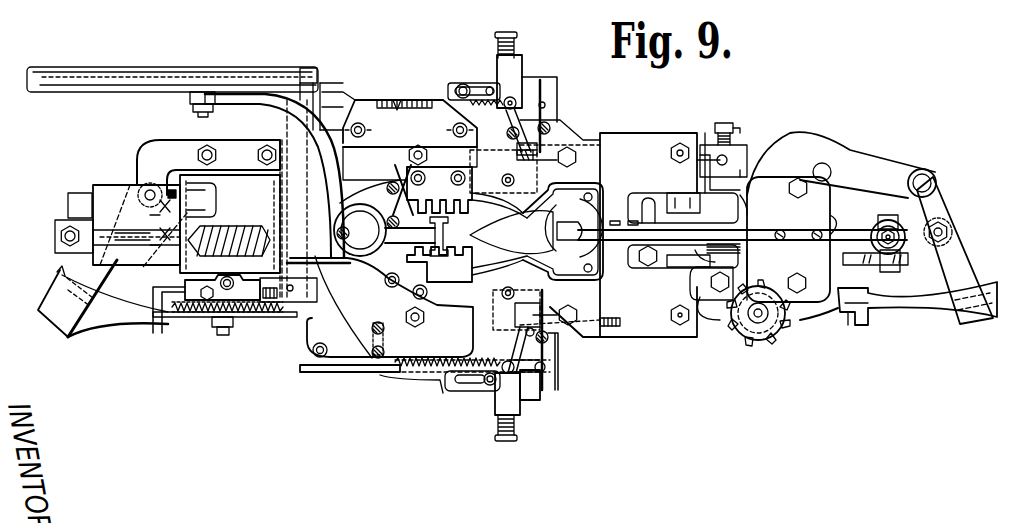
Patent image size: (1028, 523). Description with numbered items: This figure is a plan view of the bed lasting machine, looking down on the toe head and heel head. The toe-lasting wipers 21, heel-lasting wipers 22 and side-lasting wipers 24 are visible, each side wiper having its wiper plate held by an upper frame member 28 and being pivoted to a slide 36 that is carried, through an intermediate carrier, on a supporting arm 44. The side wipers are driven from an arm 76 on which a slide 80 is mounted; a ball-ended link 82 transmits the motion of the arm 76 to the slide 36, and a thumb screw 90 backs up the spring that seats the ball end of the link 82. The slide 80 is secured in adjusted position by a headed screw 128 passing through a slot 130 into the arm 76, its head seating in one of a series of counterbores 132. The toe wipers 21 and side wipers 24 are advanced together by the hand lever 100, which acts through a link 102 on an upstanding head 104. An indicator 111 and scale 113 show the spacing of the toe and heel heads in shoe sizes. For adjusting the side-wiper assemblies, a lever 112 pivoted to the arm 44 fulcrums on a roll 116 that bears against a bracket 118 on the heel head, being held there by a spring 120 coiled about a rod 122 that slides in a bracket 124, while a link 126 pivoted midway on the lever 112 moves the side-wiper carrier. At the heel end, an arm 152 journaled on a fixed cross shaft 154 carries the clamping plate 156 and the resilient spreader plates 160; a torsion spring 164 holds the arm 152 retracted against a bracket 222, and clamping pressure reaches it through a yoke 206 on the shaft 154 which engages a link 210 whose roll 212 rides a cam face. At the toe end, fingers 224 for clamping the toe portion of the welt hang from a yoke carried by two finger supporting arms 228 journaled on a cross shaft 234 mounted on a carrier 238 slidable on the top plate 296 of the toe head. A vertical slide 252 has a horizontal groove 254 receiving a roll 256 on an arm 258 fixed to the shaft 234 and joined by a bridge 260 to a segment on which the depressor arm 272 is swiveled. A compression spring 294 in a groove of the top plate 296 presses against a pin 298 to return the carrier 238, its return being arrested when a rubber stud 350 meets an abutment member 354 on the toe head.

The vertical slide 252 is at (130, 67).
The horizontal groove 254 is at (88, 92).
The roll 256 is at (190, 80).
The arm 258 is at (262, 100).
The bridge 260 is at (333, 155).
The rubber stud 350 is at (167, 173).
The abutment member 354 is at (80, 193).
The carrier 238 is at (215, 224).
The compression spring 294 is at (235, 225).
The pin 298 is at (235, 296).
The link 102 is at (83, 230).
The upstanding head 104 is at (57, 242).
The top plate 296 is at (133, 258).
The hand lever 100 is at (65, 337).
The cross shaft 234 is at (318, 95).
The arm 76 is at (420, 100).
The indicator 111 is at (400, 97).
The scale 113 is at (404, 121).
The rod 122 is at (342, 107).
The slot 130 is at (473, 90).
The headed screw 128 is at (484, 86).
The counterbores 132 is at (455, 385).
The thumb screw 90 is at (515, 45).
The slide 80 is at (477, 395).
The ball-ended link 82 is at (518, 80).
The roll 116 is at (548, 78).
The bracket 118 is at (557, 83).
The lever 112 is at (550, 113).
The link 126 is at (553, 123).
The slide 36 is at (503, 153).
The upper frame member 28 is at (533, 167).
The heel-lasting wipers 22 is at (575, 183).
The side-lasting wipers 24 is at (467, 246).
The depressor arm 272 is at (470, 225).
The toe-lasting wipers 21 is at (429, 244).
The resilient plates 160 is at (520, 236).
The clamping plate 156 is at (565, 232).
The fingers 224 is at (390, 290).
The supporting arm 44 is at (470, 158).
The finger supporting arms 228 is at (395, 172).
The bracket 124 is at (395, 372).
The spring 120 is at (420, 385).
The arm 152 is at (648, 198).
The torsion spring 164 is at (723, 253).
The link 210 is at (673, 175).
The roll 212 is at (715, 160).
The cross shaft 154 is at (724, 125).
The yoke 206 is at (755, 185).
The bracket 222 is at (800, 235).